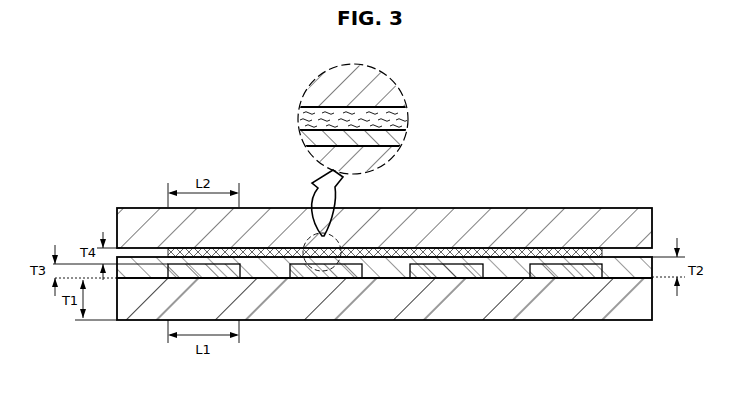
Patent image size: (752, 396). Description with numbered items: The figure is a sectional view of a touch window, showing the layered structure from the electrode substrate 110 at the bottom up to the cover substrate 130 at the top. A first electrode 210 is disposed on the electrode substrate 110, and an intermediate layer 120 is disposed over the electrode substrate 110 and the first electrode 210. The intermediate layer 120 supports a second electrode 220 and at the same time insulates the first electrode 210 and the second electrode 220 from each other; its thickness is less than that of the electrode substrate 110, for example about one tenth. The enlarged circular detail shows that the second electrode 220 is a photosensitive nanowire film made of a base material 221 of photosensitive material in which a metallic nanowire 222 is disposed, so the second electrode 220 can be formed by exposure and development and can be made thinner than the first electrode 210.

The electrode substrate 110 is at (380, 302).
The intermediate layer 120 is at (513, 277).
The cover substrate 130 is at (483, 222).
The first electrode 210 is at (575, 270).
The second electrode 220 is at (560, 249).
The base material 221 is at (398, 126).
The nanowire 222 is at (398, 93).